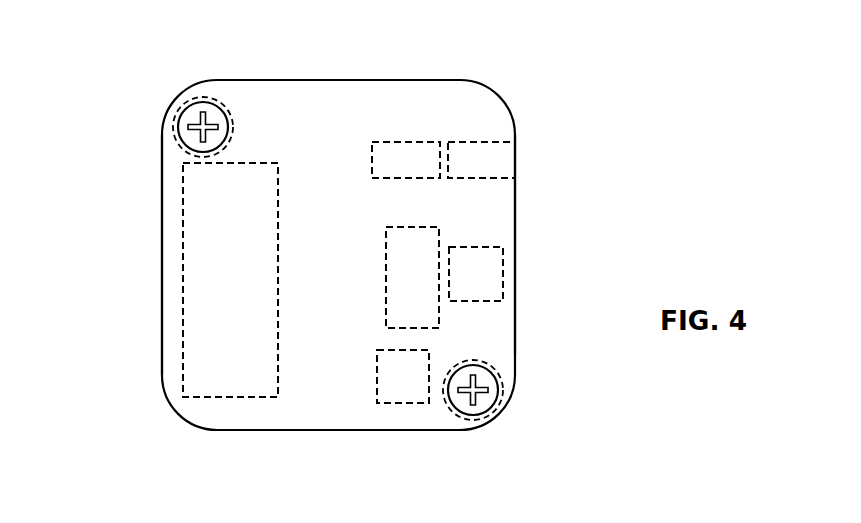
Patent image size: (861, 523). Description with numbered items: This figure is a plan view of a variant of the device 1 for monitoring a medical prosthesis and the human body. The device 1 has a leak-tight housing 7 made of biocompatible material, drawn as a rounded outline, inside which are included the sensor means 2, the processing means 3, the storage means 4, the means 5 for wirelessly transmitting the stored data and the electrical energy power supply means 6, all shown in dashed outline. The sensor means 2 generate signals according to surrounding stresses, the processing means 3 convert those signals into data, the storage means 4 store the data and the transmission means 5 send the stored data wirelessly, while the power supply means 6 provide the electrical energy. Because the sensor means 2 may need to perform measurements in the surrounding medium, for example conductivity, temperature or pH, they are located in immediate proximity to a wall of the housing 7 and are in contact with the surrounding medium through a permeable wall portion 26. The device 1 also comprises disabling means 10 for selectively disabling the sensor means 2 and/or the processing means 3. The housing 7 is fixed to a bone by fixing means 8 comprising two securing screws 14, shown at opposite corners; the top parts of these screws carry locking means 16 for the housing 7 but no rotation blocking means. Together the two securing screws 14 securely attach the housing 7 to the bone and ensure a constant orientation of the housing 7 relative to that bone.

The device 1 is at (138, 333).
The sensor means 2 is at (493, 143).
The processing means 3 is at (412, 277).
The storage means 4 is at (406, 160).
The means for wirelessly transmitting the stored data 5 is at (476, 274).
The electrical energy power supply means 6 is at (230, 280).
The leak-tight housing 7 is at (152, 248).
The means for fixing to a bone 8 is at (179, 107).
The disabling means 10 is at (403, 376).
The securing screw 14 is at (235, 113).
The locking means 16 is at (214, 107).
The permeable wall portion 26 is at (515, 157).